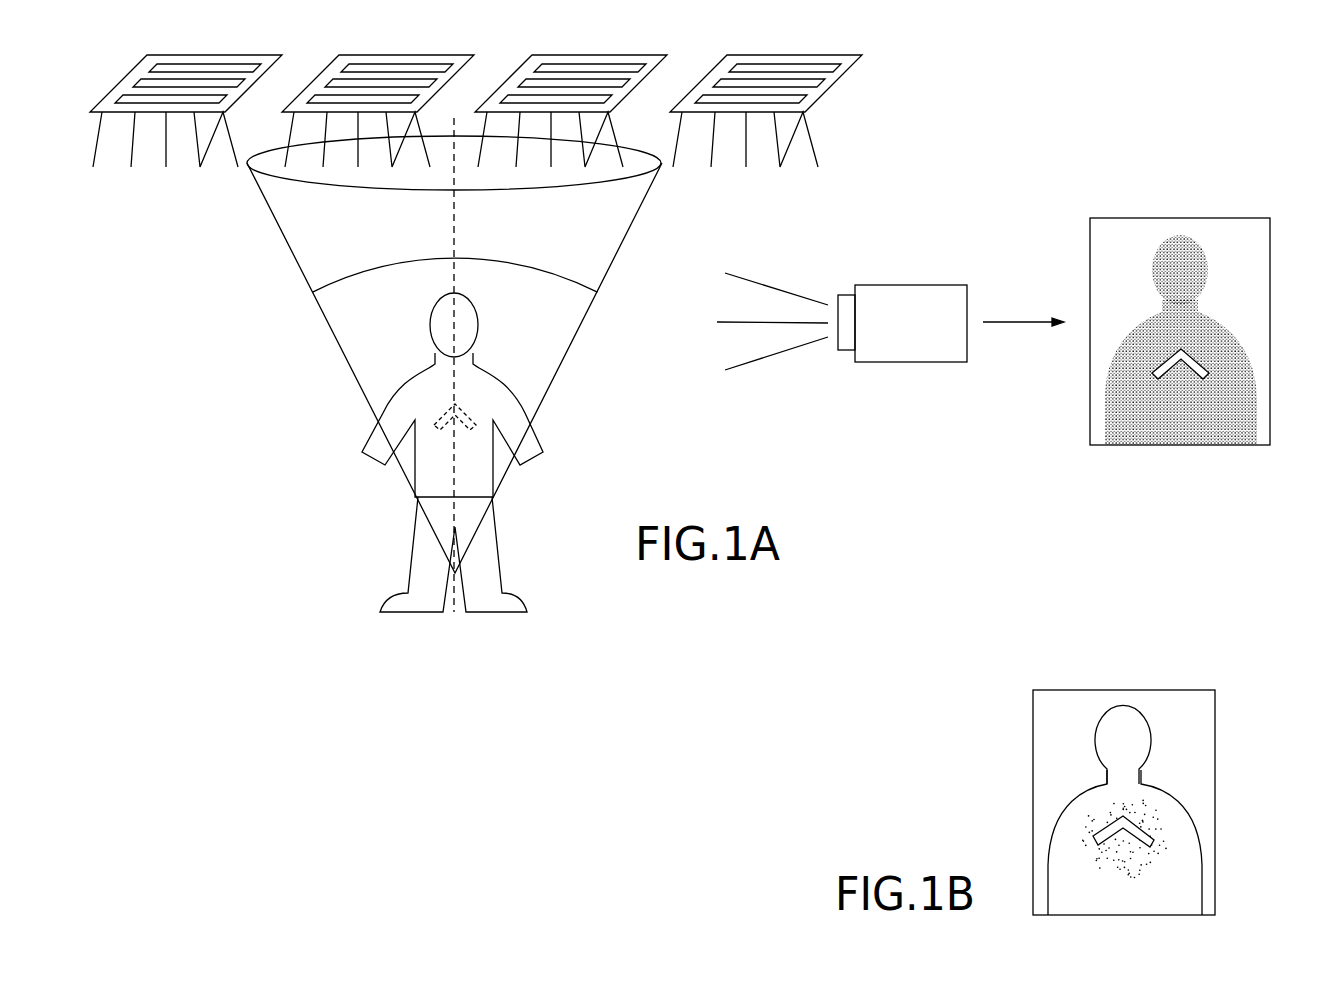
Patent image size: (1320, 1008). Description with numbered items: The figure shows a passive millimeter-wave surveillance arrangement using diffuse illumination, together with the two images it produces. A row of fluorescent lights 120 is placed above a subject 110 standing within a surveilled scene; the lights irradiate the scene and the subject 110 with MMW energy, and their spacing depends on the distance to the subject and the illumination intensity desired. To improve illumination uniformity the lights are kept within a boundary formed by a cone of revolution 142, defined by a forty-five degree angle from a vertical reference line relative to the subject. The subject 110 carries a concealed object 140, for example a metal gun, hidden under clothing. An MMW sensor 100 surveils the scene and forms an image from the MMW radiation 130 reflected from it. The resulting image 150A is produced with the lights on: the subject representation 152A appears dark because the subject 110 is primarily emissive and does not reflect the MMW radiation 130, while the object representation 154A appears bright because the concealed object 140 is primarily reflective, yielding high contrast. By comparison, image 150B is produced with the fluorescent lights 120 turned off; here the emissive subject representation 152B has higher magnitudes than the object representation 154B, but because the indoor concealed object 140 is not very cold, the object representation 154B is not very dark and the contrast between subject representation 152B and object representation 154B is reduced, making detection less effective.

In FIG. 1A, the MMW sensor 100 is at (938, 285).
In FIG. 1A, the subject 110 is at (543, 428).
In FIG. 1A, the fluorescent lights 120 is at (877, 55).
In FIG. 1A, the MMW radiation 130 is at (785, 177).
In FIG. 1A, the concealed object 140 is at (437, 417).
In FIG. 1A, the cone of revolution 142 is at (633, 220).
In FIG. 1A, the image 150A is at (1126, 276).
In FIG. 1A, the subject representation 152A is at (1155, 264).
In FIG. 1A, the object representation 154A is at (1165, 349).
In FIG. 1B, the image 150B is at (1116, 747).
In FIG. 1B, the subject representation 152B is at (1140, 742).
In FIG. 1B, the object representation 154B is at (1140, 829).